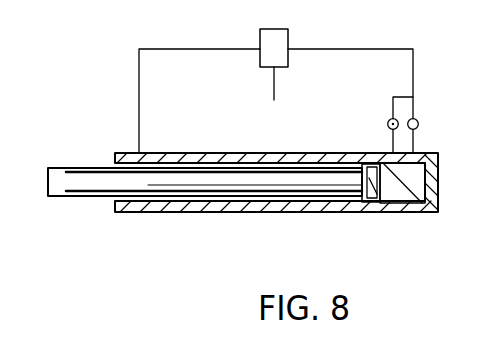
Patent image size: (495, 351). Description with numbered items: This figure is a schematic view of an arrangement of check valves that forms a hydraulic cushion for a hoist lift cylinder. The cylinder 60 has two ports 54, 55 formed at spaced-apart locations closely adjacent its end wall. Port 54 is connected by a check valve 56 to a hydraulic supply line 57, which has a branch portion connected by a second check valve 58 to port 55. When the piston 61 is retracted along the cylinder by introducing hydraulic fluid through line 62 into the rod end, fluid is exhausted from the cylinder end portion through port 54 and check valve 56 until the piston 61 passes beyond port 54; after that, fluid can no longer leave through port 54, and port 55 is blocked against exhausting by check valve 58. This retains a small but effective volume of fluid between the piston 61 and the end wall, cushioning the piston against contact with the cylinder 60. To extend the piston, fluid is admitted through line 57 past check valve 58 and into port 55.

The port 54 is at (422, 211).
The port 55 is at (437, 207).
The check valve 56 is at (399, 131).
The hydraulic supply line 57 is at (367, 49).
The check valve 58 is at (406, 131).
The cylinder 60 is at (278, 212).
The piston 61 is at (383, 211).
The line 62 is at (139, 85).